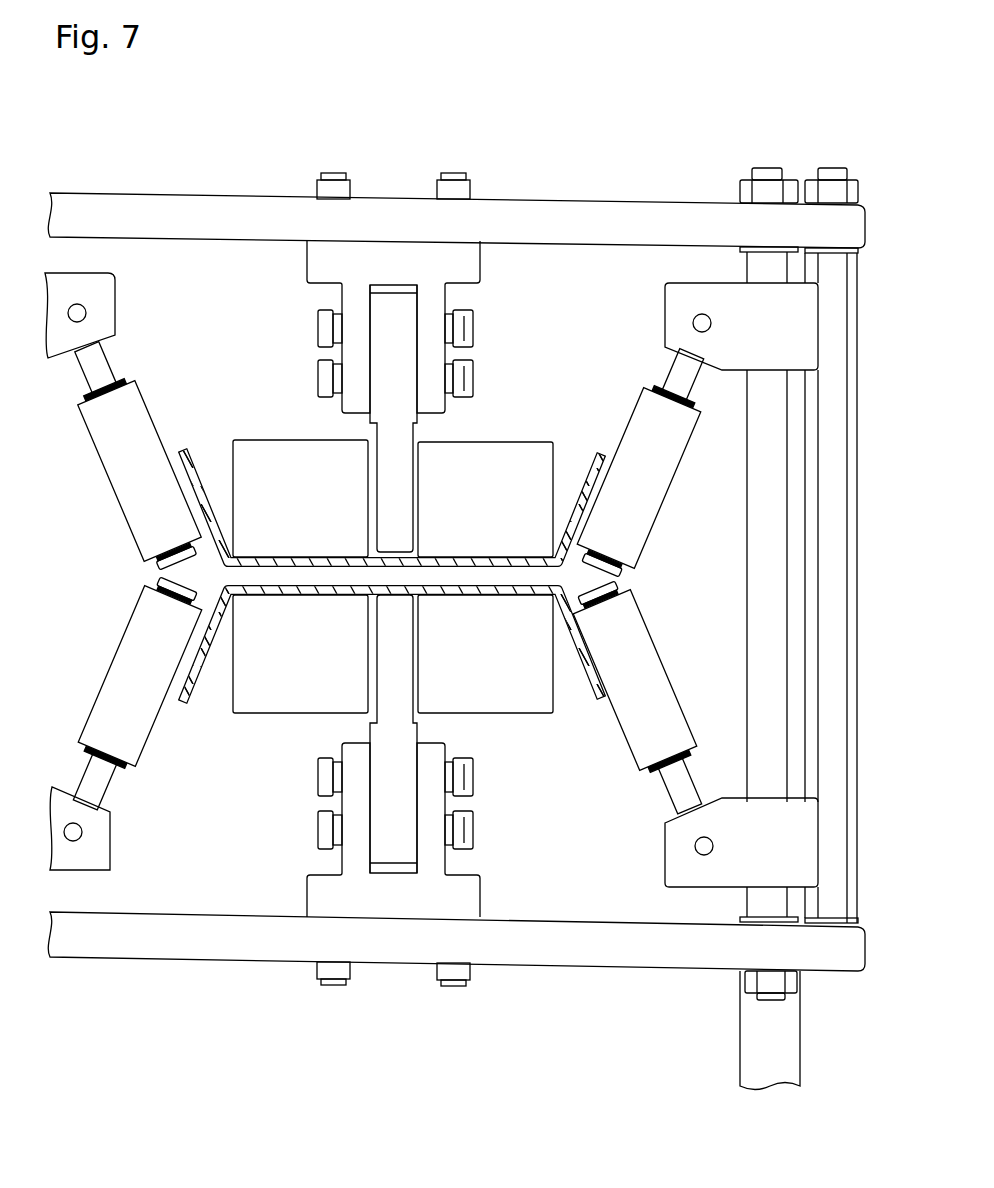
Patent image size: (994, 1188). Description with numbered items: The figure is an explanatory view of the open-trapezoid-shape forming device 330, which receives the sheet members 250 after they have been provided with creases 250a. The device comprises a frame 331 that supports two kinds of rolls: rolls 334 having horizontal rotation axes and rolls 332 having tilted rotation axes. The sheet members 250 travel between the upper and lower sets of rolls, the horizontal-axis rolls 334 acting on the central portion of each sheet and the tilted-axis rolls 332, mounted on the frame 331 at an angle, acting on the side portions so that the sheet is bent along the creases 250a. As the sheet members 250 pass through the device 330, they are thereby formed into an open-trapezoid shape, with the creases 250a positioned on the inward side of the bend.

The open-trapezoid-shape forming device 330 is at (531, 150).
The frame 331 is at (545, 950).
The rolls having tilted rotation axes 332 is at (132, 500).
The rolls having horizontal rotation axes 334 is at (270, 462).
The sheet member 250 is at (332, 555).
The crease 250a is at (224, 528).